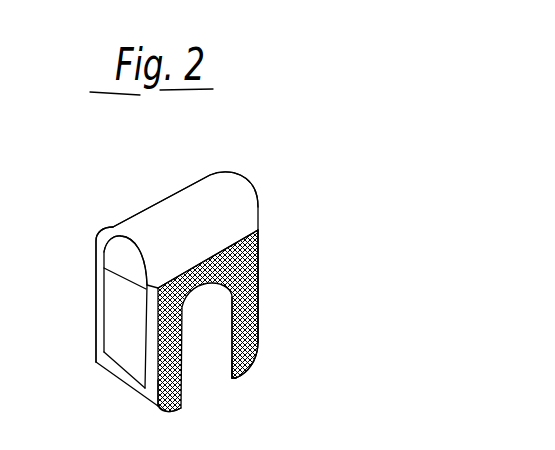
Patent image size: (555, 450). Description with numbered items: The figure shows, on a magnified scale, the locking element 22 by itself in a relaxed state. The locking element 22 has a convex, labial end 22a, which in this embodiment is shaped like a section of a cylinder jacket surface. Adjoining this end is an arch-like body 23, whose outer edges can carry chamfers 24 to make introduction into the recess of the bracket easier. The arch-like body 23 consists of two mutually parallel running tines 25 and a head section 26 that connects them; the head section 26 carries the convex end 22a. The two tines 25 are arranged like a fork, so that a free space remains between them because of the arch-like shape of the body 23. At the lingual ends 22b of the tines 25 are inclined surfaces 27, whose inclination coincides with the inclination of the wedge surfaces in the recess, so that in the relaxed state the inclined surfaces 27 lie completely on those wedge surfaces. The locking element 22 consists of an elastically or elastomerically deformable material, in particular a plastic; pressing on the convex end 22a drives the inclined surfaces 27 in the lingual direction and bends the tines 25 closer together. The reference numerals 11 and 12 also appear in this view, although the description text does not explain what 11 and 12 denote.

The device 11 is at (286, 410).
The opening 12 is at (170, 367).
The locking element 22 is at (240, 263).
The convex labial end 22a is at (220, 195).
The lingual ends of the tines 22b is at (243, 368).
The arch-like body 23 is at (167, 307).
The chamfers 24 is at (100, 298).
The tines 25 is at (250, 327).
The head section 26 is at (200, 277).
The inclined surfaces 27 is at (128, 370).